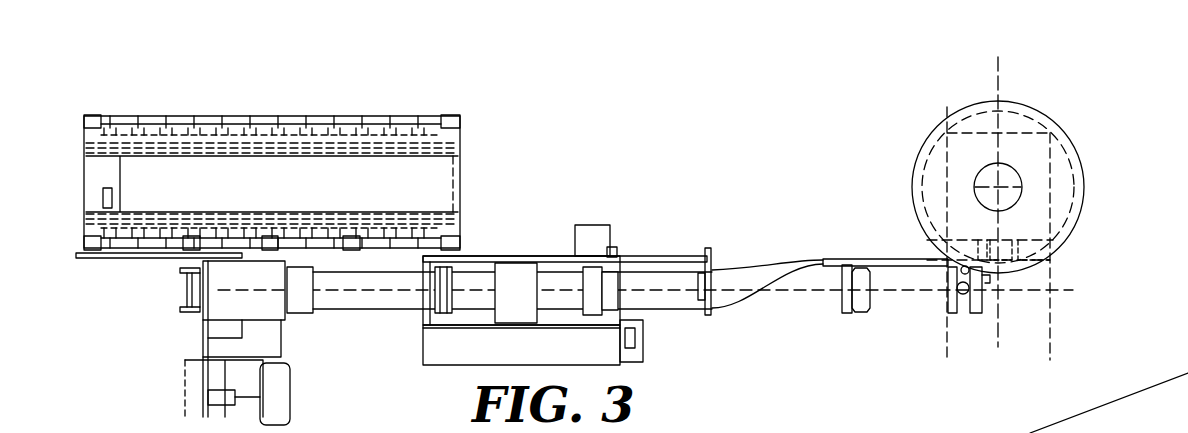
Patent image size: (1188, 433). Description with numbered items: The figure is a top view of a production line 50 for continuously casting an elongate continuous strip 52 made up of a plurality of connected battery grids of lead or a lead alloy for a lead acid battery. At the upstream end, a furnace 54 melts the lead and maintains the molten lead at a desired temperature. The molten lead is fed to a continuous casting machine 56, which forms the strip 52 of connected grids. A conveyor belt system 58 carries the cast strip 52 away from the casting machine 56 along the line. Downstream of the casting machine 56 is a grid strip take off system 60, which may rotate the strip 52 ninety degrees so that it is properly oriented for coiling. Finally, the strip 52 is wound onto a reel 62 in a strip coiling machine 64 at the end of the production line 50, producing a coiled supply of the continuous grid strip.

The production line 50 is at (470, 86).
The elongate continuous strip 52 is at (358, 312).
The furnace 54 is at (240, 118).
The continuous casting machine 56 is at (184, 293).
The conveyor belt system 58 is at (327, 316).
The grid strip take off system 60 is at (538, 249).
The reel 62 is at (1083, 163).
The strip coiling machine 64 is at (1001, 296).